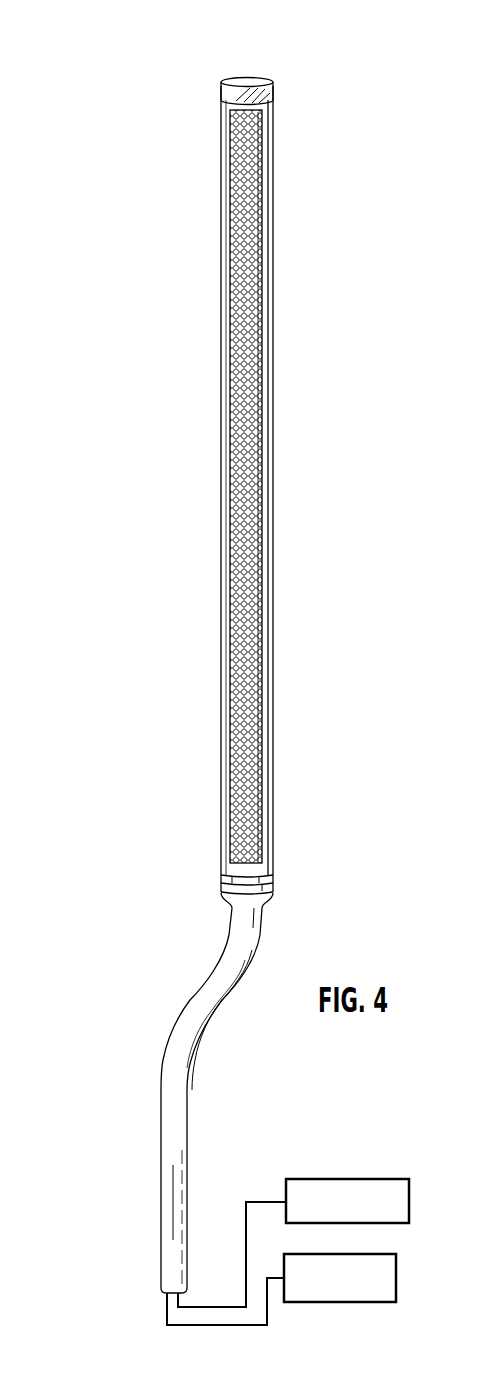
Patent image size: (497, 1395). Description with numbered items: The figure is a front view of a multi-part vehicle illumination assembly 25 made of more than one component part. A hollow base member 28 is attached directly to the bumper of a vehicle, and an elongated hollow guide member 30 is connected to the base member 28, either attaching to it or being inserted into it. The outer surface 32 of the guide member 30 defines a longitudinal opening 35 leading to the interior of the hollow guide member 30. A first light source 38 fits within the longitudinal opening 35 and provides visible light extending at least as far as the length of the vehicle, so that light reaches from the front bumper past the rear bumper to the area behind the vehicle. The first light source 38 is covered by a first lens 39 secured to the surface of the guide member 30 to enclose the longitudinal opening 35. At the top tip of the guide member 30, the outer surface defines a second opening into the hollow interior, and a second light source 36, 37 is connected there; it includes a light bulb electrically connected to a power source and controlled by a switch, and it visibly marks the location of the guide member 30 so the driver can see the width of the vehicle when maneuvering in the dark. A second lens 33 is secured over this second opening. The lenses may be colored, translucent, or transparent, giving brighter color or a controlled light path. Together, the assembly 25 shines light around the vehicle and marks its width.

The vehicle illumination assembly 25 is at (158, 137).
The hollow base member 28 is at (158, 1088).
The hollow guide member 30 is at (273, 535).
The outer surface 32 is at (268, 368).
The second lens 33 is at (221, 90).
The longitudinal opening 35 is at (230, 488).
The second light source 36 is at (272, 96).
The second light source 37 is at (250, 78).
The first light source 38 is at (243, 625).
The first lens 39 is at (273, 876).